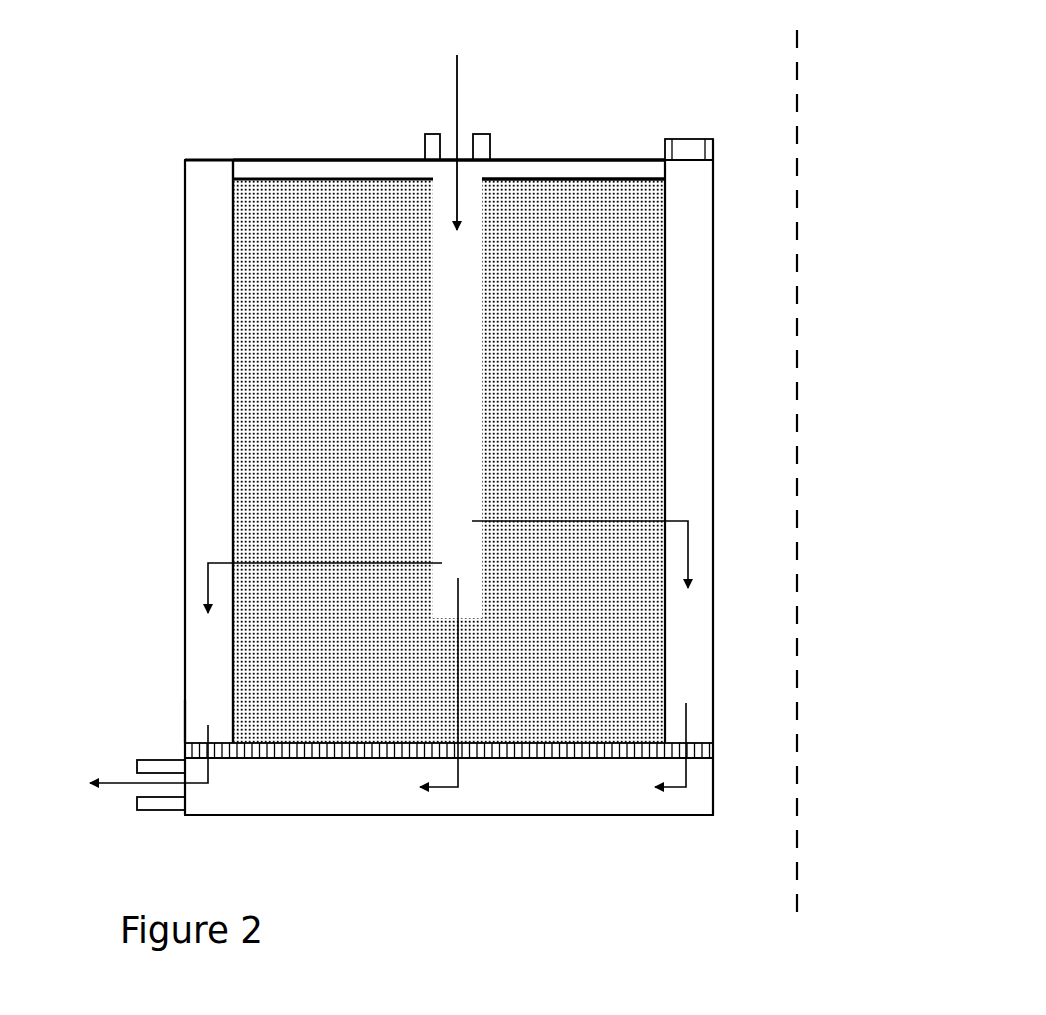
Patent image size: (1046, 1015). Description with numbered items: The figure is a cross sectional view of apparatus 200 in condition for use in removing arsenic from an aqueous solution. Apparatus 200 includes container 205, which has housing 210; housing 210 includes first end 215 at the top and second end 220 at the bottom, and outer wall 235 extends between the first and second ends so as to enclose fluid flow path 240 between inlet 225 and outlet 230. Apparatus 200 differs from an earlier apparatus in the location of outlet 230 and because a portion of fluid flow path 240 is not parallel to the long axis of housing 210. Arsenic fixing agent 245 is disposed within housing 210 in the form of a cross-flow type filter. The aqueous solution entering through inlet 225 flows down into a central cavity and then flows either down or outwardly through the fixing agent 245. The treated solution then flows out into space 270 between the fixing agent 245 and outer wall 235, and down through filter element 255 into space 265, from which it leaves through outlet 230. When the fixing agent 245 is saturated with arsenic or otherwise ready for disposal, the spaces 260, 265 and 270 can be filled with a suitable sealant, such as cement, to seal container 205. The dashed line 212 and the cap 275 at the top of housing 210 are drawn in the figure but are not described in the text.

The apparatus 200 is at (152, 112).
The container 205 is at (183, 266).
The housing 210 is at (183, 218).
The centerline axis 212 is at (800, 220).
The first end 215 is at (318, 160).
The second end 220 is at (580, 815).
The inlet 225 is at (468, 132).
The outlet 230 is at (133, 792).
The outer wall 235 is at (185, 658).
The fluid flow path 240 is at (222, 563).
The arsenic fixing agent 245 is at (327, 313).
The filter element 255 is at (195, 750).
The space 260 is at (550, 172).
The space 265 is at (315, 800).
The space 270 is at (200, 403).
The top cap 275 is at (663, 148).